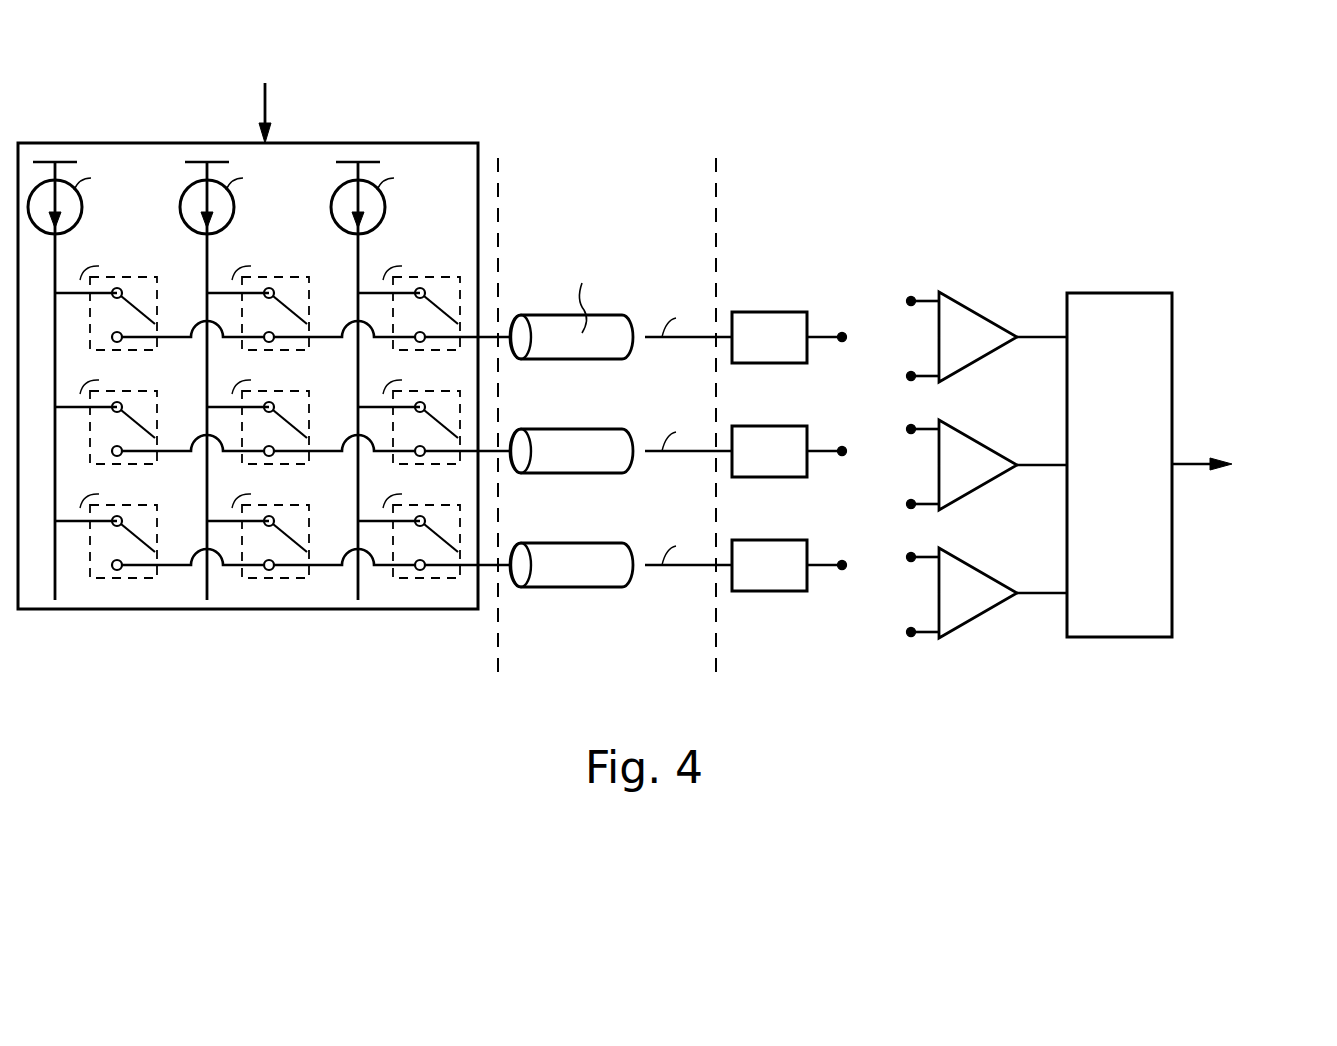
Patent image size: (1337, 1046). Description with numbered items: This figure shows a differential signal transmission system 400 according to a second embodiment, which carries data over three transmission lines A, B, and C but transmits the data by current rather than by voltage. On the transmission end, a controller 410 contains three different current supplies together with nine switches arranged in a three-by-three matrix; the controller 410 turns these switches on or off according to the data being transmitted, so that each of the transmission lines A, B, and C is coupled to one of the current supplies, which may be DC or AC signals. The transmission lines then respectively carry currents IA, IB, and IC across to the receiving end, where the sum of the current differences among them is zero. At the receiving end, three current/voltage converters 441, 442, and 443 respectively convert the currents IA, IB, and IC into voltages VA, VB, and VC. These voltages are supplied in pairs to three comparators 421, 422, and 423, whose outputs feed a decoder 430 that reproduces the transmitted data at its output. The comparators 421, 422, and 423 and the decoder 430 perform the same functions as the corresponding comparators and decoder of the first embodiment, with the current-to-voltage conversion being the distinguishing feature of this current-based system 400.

The differential signal transmission system 400 is at (1097, 166).
The controller 410 is at (440, 143).
The comparator 421 is at (987, 337).
The comparator 422 is at (987, 465).
The comparator 423 is at (987, 593).
The decoder 430 is at (1119, 465).
The current/voltage converter 441 is at (746, 337).
The current/voltage converter 442 is at (746, 451).
The current/voltage converter 443 is at (746, 565).